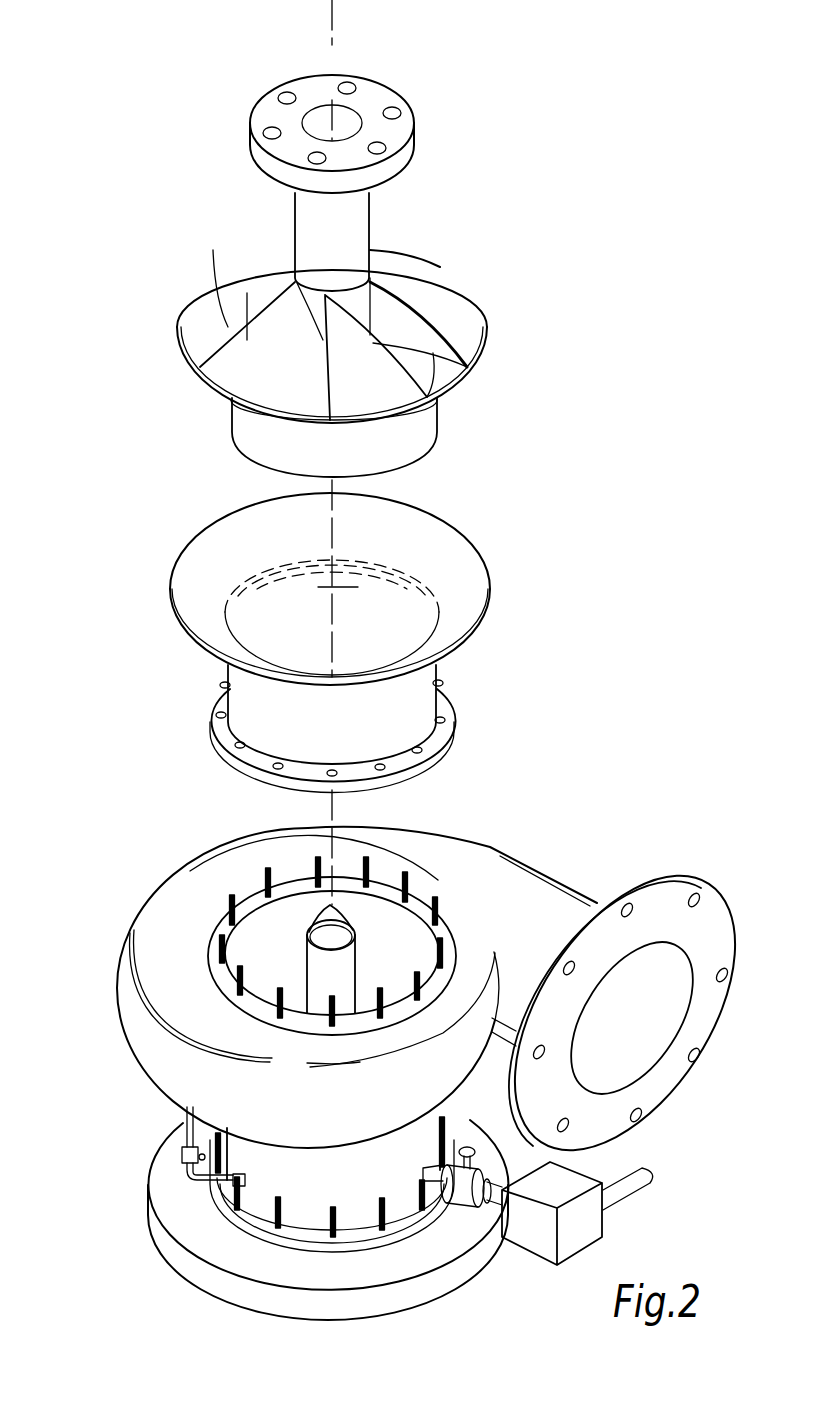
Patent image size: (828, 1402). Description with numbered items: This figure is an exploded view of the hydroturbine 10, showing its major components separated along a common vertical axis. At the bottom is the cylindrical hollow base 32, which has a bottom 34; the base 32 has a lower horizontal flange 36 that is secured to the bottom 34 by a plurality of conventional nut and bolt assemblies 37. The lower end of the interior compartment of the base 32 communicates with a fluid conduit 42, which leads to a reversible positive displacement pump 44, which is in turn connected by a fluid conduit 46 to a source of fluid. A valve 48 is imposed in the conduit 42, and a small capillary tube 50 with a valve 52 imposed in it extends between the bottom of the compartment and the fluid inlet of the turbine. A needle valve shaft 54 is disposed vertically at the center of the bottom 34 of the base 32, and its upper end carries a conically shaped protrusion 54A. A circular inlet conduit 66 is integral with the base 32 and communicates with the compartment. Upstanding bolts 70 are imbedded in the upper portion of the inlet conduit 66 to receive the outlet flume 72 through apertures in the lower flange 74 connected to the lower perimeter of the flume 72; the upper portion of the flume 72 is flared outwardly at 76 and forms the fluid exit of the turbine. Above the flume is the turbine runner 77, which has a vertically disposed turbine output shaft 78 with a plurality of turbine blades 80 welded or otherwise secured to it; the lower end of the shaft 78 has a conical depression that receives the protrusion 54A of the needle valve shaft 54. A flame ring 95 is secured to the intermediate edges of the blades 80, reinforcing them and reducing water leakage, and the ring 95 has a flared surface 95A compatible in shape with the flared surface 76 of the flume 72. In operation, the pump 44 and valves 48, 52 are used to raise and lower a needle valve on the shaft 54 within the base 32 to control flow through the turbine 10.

The hydroturbine 10 is at (545, 800).
The cylindrical hollow base 32 is at (367, 1170).
The bottom 34 is at (165, 1250).
The lower horizontal flange 36 is at (342, 1252).
The nut and bolt assemblies 37 is at (382, 1200).
The fluid conduit 42 is at (433, 1200).
The reversible positive displacement pump 44 is at (563, 1180).
The fluid conduit 46 is at (640, 1182).
The valve 48 is at (470, 1147).
The capillary tube 50 is at (186, 1124).
The valve 52 is at (182, 1157).
The needle valve shaft 54 is at (343, 972).
The conically shaped protrusion 54A is at (340, 915).
The circular inlet conduit 66 is at (157, 960).
The upstanding bolts 70 is at (228, 925).
The outlet flume 72 is at (463, 533).
The lower flange 74 is at (446, 700).
The flared upper portion 76 is at (423, 563).
The turbine runner 77 is at (440, 157).
The turbine output shaft 78 is at (300, 208).
The turbine blades 80 is at (277, 277).
The flame ring 95 is at (483, 316).
The flared surface 95A is at (395, 435).